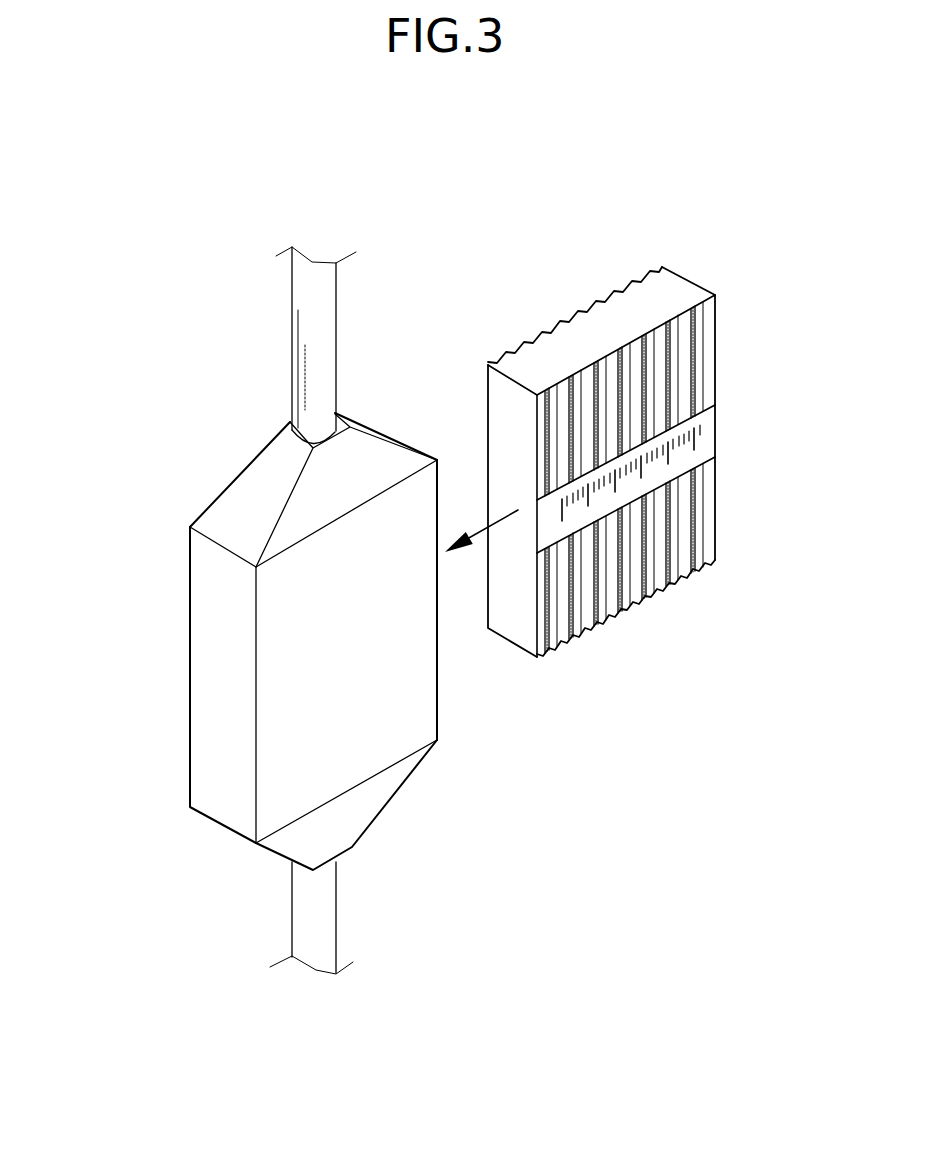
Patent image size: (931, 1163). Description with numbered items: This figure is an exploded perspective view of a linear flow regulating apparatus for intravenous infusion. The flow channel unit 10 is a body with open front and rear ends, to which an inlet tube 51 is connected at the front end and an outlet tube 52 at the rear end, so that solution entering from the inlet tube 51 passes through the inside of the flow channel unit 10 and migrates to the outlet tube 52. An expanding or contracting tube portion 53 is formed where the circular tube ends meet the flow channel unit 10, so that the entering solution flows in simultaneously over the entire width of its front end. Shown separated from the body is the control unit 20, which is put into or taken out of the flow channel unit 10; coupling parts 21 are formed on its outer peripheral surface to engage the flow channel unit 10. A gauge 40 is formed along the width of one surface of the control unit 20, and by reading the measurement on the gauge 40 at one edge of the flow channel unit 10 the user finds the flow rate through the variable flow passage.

The flow channel unit 10 is at (246, 640).
The control unit 20 is at (653, 487).
The coupling parts 21 is at (715, 342).
The gauge 40 is at (703, 430).
The inlet tube 51 is at (310, 307).
The outlet tube 52 is at (325, 921).
The expanding or contracting tube portion 53 is at (248, 488).